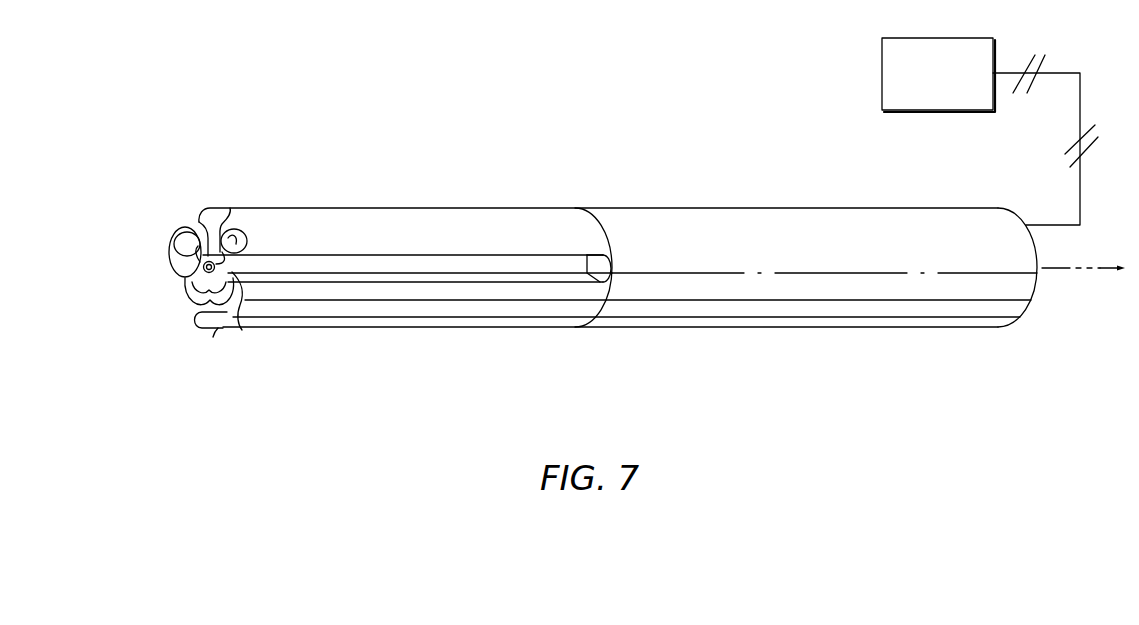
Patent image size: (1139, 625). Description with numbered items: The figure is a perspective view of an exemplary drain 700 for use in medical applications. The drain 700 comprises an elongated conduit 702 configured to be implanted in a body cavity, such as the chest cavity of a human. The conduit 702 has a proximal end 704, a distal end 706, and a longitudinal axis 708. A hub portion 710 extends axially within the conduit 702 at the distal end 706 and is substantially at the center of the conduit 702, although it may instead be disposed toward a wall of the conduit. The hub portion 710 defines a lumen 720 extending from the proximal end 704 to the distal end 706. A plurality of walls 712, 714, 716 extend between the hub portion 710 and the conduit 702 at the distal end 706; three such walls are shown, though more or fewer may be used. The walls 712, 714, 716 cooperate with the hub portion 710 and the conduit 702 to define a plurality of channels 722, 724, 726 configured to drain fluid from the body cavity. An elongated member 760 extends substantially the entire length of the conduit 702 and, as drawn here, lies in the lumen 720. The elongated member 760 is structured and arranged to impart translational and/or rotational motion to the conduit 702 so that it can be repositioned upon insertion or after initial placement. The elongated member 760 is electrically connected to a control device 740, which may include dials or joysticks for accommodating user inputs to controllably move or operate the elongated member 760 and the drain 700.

The drain 700 is at (98, 160).
The elongated conduit 702 is at (581, 350).
The proximal end 704 is at (977, 352).
The distal end 706 is at (220, 362).
The longitudinal axis 708 is at (1068, 268).
The hub portion 710 is at (195, 253).
The wall 712 is at (208, 228).
The wall 714 is at (184, 292).
The wall 716 is at (238, 325).
The lumen 720 is at (216, 264).
The channel 722 is at (240, 214).
The channel 724 is at (178, 256).
The channel 726 is at (190, 308).
The control device 740 is at (990, 131).
The elongated member 760 is at (203, 269).